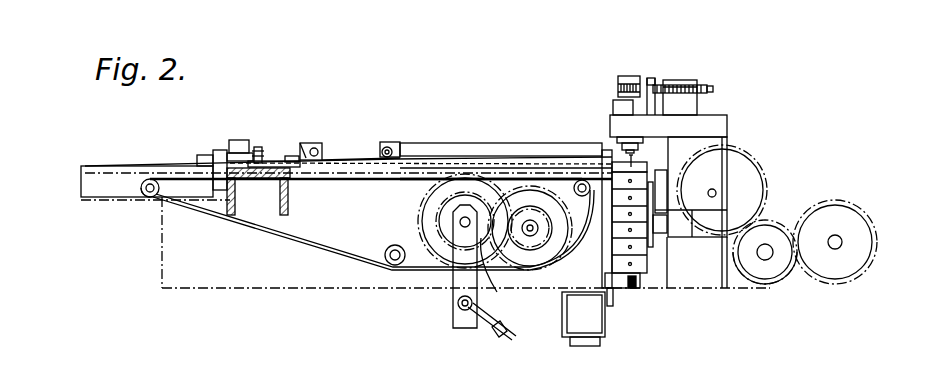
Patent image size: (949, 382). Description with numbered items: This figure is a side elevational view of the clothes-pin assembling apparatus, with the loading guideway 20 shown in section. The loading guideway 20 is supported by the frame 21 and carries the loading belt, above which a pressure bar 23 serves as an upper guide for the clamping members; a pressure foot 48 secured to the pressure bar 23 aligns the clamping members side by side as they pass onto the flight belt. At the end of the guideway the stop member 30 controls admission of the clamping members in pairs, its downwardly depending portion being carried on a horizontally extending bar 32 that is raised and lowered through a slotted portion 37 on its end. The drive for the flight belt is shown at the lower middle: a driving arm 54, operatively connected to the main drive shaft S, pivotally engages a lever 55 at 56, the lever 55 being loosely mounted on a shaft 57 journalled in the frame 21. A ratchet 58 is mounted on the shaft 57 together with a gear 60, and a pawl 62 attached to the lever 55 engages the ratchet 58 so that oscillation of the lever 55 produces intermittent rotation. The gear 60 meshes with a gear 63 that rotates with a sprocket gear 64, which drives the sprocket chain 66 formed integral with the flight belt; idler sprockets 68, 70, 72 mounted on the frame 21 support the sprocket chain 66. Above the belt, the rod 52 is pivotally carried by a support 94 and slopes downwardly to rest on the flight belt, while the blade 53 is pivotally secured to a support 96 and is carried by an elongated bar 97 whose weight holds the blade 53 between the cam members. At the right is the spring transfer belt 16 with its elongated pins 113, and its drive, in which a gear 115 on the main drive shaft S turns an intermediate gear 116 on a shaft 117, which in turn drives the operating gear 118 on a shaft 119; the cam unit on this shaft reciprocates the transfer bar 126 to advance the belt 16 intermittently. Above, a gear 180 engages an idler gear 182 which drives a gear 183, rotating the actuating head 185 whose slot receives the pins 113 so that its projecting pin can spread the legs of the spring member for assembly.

The spring transfer belt 16 is at (645, 280).
The loading guideway 20 is at (282, 194).
The frame 21 is at (280, 270).
The pressure bar 23 is at (258, 147).
The stop member 30 is at (240, 140).
The horizontally extending bar 32 is at (252, 371).
The slotted portion 37 is at (460, 337).
The pressure foot 48 is at (290, 157).
The rod 52 is at (335, 160).
The blade 53 is at (432, 144).
The driving arm 54 is at (492, 325).
The lever 55 is at (455, 278).
The pivot 56 is at (458, 305).
The shaft 57 is at (460, 222).
The ratchet 58 is at (462, 197).
The gear 60 is at (478, 185).
The pawl 62 is at (499, 277).
The gear 63 is at (548, 245).
The sprocket gear 64 is at (540, 175).
The sprocket chain 66 is at (310, 249).
The idler sprocket 68 is at (582, 180).
The idler sprocket 70 is at (386, 252).
The idler sprocket 72 is at (150, 178).
The support 94 is at (305, 143).
The support 96 is at (384, 147).
The elongated bar 97 is at (527, 183).
The elongated pin 113 is at (634, 160).
The gear 115 is at (851, 234).
The intermediate gear 116 is at (783, 282).
The shaft 117 is at (766, 250).
The operating gear 118 is at (766, 182).
The shaft 119 is at (691, 188).
The transfer bar 126 is at (658, 196).
The gear 180 is at (713, 89).
The idler gear 182 is at (662, 84).
The gear 183 is at (618, 84).
The actuating head 185 is at (668, 201).
The main drive shaft S is at (838, 245).